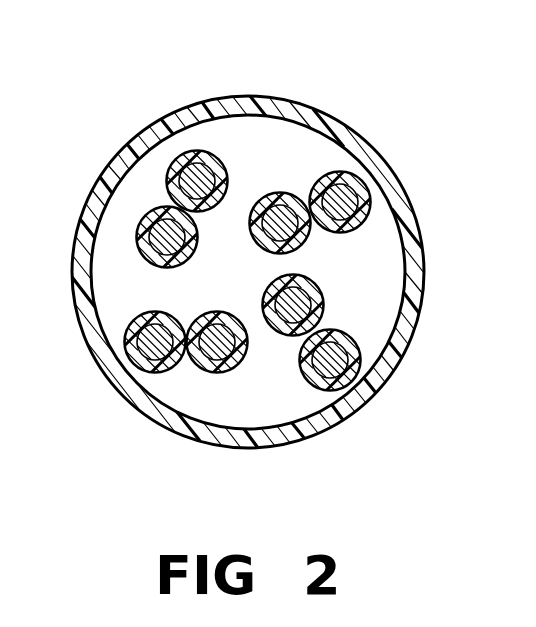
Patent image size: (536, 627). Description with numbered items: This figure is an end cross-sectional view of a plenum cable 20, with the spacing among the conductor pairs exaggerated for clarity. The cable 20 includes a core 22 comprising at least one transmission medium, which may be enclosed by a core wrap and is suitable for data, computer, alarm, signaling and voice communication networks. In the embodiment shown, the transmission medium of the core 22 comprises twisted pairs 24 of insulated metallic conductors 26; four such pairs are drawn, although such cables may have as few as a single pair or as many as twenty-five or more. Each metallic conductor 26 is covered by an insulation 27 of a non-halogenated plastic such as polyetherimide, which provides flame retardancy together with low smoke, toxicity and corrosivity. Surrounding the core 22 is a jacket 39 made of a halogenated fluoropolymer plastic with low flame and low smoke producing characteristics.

The cable 20 is at (268, 241).
The core 22 is at (310, 152).
The twisted pairs 24 is at (320, 283).
The insulated metallic conductors 26 is at (330, 329).
The insulation 27 is at (312, 371).
The jacket 39 is at (415, 259).